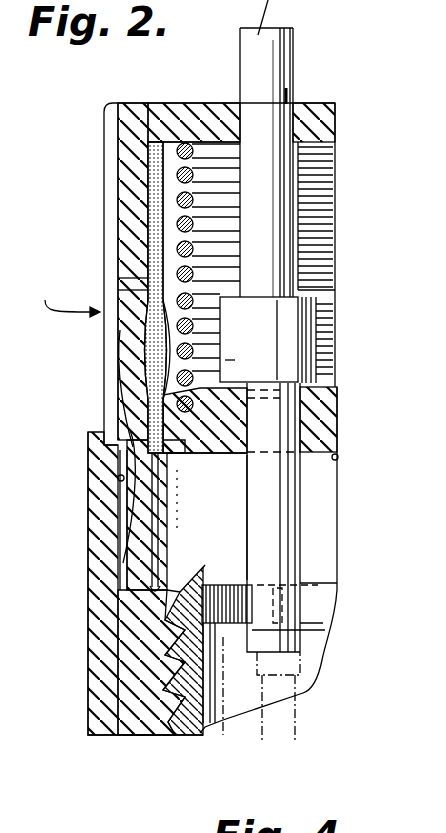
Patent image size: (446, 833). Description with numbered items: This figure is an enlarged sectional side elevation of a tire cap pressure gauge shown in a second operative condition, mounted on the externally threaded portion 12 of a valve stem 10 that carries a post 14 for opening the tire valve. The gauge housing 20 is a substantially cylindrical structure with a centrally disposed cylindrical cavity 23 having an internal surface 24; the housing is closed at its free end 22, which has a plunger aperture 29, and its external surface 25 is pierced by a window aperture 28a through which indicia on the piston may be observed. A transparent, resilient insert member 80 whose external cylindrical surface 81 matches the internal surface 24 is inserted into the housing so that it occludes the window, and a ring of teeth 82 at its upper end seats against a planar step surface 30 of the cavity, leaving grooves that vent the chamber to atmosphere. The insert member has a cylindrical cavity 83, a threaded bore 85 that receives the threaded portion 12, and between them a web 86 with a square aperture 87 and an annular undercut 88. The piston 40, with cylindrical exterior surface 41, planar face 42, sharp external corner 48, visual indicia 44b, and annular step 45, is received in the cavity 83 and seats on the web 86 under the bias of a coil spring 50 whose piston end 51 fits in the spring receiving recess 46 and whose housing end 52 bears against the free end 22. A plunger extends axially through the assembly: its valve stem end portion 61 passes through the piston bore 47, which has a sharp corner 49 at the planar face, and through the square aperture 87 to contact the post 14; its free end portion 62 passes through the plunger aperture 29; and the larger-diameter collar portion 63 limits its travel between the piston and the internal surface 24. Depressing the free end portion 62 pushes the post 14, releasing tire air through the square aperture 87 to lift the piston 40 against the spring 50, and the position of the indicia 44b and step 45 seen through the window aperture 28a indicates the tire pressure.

The valve stem 10 is at (332, 657).
The externally threaded portion 12 is at (125, 680).
The post 14 is at (293, 718).
The housing 20 is at (88, 527).
The free end 22 is at (220, 103).
The cylindrical cavity 23 is at (125, 700).
The internal surface 24 is at (118, 478).
The external surface 25 is at (104, 140).
The window aperture 28a is at (64, 296).
The plunger aperture 29 is at (290, 95).
The planar step surface 30 is at (118, 278).
The piston 40 is at (130, 343).
The exterior surface 41 is at (135, 157).
The planar face 42 is at (338, 458).
The visual indicia 44b is at (140, 373).
The annular step 45 is at (193, 285).
The spring receiving recess 46 is at (205, 375).
The bore 47 is at (337, 402).
The external corner 48 is at (120, 478).
The sharp corner 49 is at (240, 455).
The spring 50 is at (335, 268).
The piston end 51 is at (205, 383).
The housing end 52 is at (335, 142).
The valve stem end portion 61 is at (280, 503).
The free end portion 62 is at (298, 178).
The collar portion 63 is at (335, 338).
The insert member 80 is at (125, 640).
The external cylindrical surface 81 is at (118, 612).
The teeth 82 is at (137, 278).
The cylindrical cavity 83 is at (205, 468).
The threaded bore 85 is at (190, 727).
The web 86 is at (195, 588).
The square aperture 87 is at (320, 597).
The annular undercut 88 is at (150, 586).